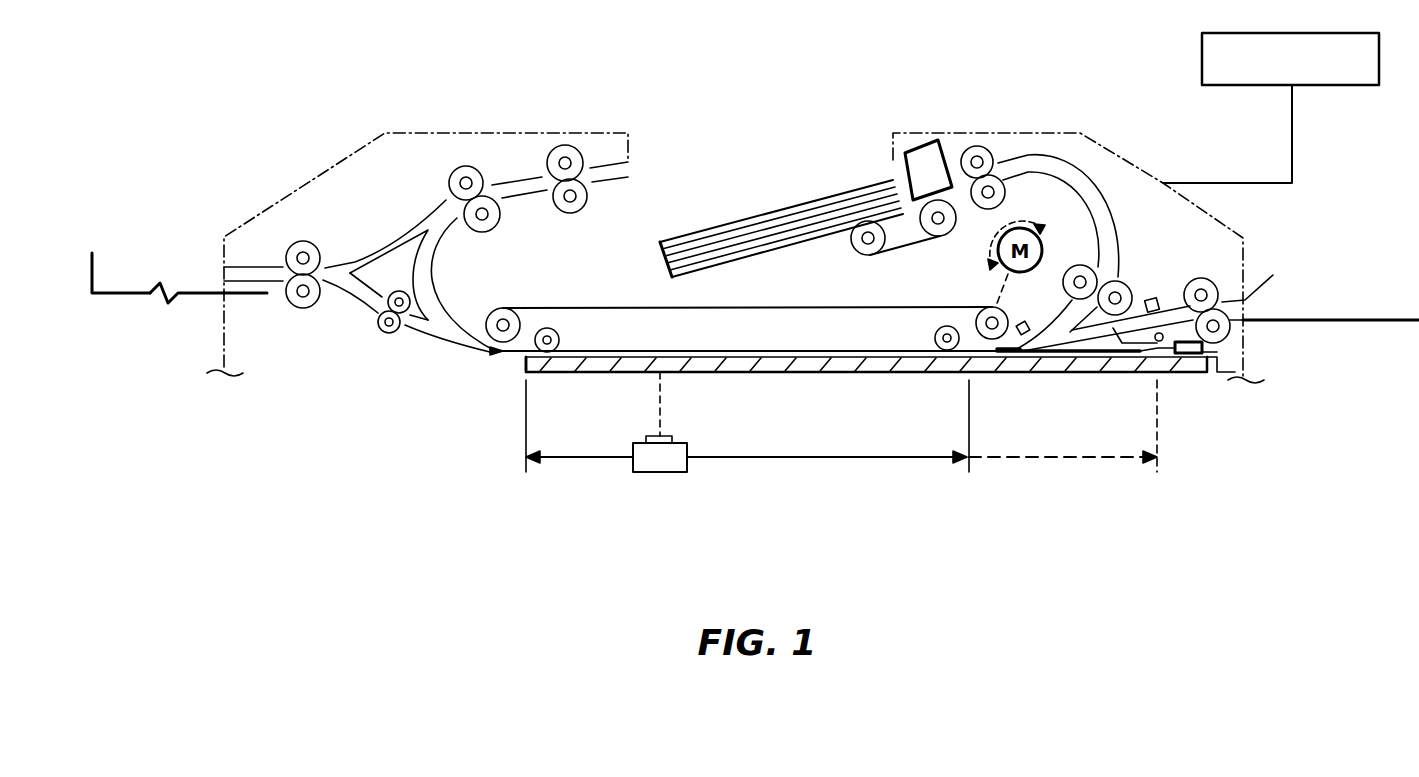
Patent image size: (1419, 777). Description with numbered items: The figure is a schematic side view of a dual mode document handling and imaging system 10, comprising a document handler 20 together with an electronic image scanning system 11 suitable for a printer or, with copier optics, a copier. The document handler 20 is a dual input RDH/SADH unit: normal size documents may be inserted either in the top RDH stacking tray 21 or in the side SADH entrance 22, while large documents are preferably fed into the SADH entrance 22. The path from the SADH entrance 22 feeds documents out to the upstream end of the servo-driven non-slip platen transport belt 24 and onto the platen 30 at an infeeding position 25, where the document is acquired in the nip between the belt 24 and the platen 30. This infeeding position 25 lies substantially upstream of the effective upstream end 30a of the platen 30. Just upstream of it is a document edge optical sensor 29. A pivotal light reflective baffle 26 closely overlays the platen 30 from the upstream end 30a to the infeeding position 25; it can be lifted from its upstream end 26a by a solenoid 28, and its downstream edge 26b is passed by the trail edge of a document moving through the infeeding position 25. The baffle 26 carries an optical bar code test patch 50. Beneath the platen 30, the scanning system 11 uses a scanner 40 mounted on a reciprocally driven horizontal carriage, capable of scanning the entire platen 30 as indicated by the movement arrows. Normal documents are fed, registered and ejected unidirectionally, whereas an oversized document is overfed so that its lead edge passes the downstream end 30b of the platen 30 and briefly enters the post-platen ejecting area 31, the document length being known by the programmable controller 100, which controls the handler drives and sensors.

The dual mode document handling and imaging system 10 is at (614, 492).
The electronic image scanning system 11 is at (655, 435).
The document handler 20 is at (603, 97).
The RDH stacking tray 21 is at (777, 247).
The SADH entrance 22 is at (1268, 305).
The platen transport belt 24 is at (877, 351).
The infeeding position 25 is at (975, 346).
The infeeding area light reflective baffle 26 is at (1057, 353).
The upstream end of baffle 26a is at (1157, 357).
The downstream edge of baffle 26b is at (997, 353).
The solenoid 28 is at (1213, 347).
The document edge optical sensor 29 is at (1022, 320).
The platen 30 is at (700, 373).
The upstream end of platen 30a is at (1162, 356).
The downstream end of platen 30b is at (536, 373).
The post-platen ejecting area 31 is at (487, 353).
The scanner 40 is at (657, 473).
The optical bar code test patch 50 is at (1122, 353).
The programmable controller 100 is at (1328, 87).